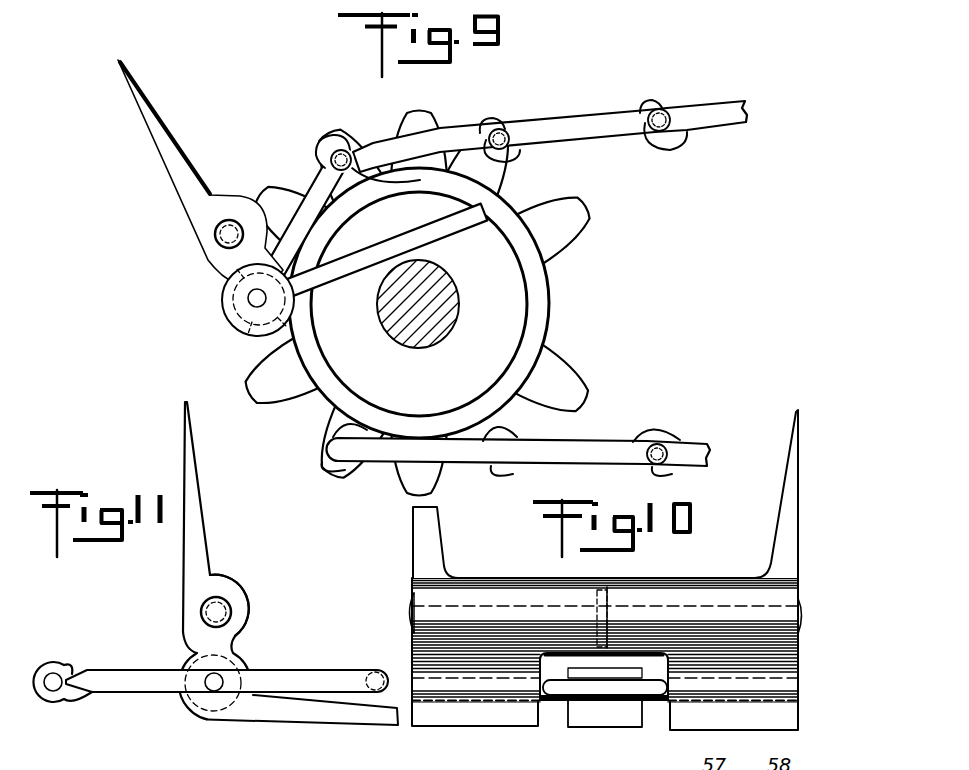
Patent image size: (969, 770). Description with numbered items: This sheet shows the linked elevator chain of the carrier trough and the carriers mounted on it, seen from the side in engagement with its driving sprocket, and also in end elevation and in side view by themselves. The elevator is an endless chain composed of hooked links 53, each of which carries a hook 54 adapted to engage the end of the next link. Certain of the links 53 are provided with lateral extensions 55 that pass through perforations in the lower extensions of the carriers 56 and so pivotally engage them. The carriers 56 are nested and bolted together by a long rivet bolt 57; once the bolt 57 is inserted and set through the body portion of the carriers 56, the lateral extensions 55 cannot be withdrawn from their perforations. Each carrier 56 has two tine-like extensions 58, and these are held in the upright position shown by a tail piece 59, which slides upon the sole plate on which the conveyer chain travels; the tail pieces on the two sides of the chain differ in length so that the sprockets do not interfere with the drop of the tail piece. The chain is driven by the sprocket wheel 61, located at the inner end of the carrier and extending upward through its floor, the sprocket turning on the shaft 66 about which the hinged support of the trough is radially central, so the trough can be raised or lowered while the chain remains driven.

In FIG. 9, the hooked link 53 is at (592, 432).
In FIG. 10, the hooked link 53 is at (567, 700).
In FIG. 11, the hooked link 53 is at (227, 670).
In FIG. 10, the hook 54 is at (613, 722).
In FIG. 11, the hook 54 is at (47, 662).
In FIG. 9, the lateral extension 55 is at (248, 299).
In FIG. 10, the lateral extension 55 is at (490, 690).
In FIG. 11, the lateral extension 55 is at (222, 680).
In FIG. 10, the carrier 56 is at (501, 580).
In FIG. 11, the carrier 56 is at (253, 606).
In FIG. 9, the rivet bolt 57 is at (215, 241).
In FIG. 10, the rivet bolt 57 is at (412, 592).
In FIG. 11, the rivet bolt 57 is at (224, 600).
In FIG. 9, the tine-like extension 58 is at (178, 148).
In FIG. 10, the tine-like extension 58 is at (437, 548).
In FIG. 11, the tine-like extension 58 is at (207, 512).
In FIG. 9, the tail piece 59 is at (397, 252).
In FIG. 11, the tail piece 59 is at (334, 718).
In FIG. 9, the sprocket wheel 61 is at (520, 293).
In FIG. 9, the shaft 66 is at (453, 320).